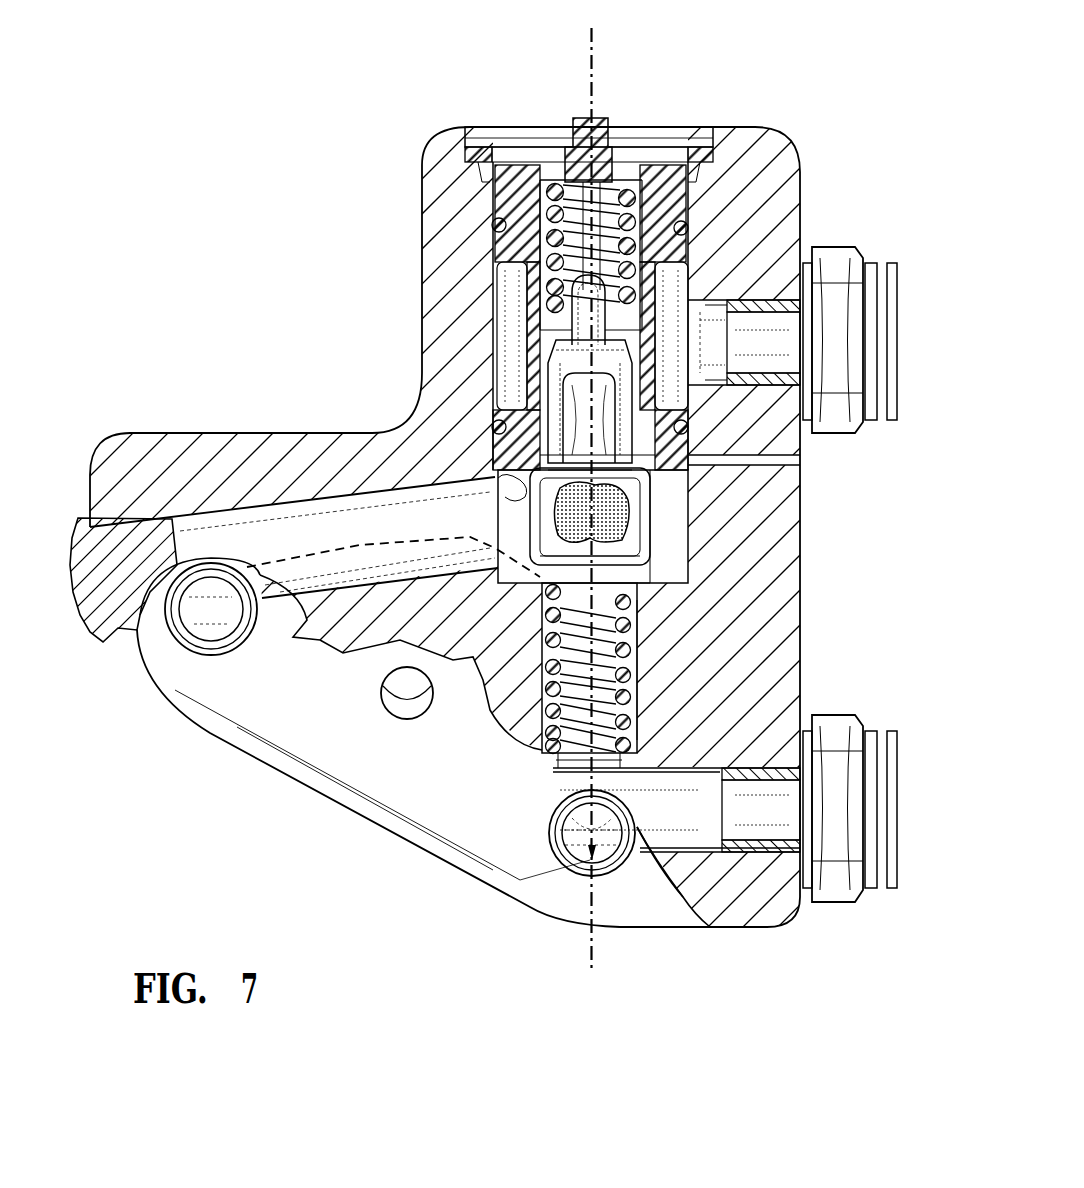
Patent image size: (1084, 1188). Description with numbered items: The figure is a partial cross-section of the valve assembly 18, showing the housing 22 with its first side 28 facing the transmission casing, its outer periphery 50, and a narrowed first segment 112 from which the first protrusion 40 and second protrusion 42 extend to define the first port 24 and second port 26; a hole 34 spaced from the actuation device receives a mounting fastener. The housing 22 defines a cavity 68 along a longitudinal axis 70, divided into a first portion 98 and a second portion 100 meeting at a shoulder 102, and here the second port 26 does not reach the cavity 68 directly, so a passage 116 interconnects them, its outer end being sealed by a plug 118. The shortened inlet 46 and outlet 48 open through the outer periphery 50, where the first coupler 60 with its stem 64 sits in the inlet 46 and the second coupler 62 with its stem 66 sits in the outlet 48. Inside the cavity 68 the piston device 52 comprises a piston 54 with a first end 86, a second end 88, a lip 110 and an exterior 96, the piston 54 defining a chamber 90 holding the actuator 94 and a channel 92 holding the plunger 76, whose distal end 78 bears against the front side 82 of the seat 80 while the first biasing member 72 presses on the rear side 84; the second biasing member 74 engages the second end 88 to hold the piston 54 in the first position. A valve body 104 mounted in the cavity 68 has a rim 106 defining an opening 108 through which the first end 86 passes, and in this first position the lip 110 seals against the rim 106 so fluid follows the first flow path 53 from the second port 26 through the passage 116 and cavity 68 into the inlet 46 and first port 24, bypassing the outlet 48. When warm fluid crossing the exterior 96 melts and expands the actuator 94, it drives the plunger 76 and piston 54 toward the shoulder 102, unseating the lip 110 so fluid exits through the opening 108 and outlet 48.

The valve assembly 18 is at (858, 112).
The housing 22 is at (313, 770).
The first port 24 is at (583, 867).
The second port 26 is at (203, 637).
The first side 28 is at (427, 827).
The hole 34 is at (410, 713).
The first protrusion 40 is at (627, 862).
The second protrusion 42 is at (250, 653).
The inlet 46 is at (707, 813).
The outlet 48 is at (705, 305).
The outer periphery 50 is at (745, 127).
The piston device 52 is at (700, 490).
The first flow path 53 is at (358, 550).
The piston 54 is at (697, 580).
The first coupler 60 is at (880, 843).
The second coupler 62 is at (880, 313).
The stem of first coupler 64 is at (757, 765).
The stem of second coupler 66 is at (762, 287).
The cavity 68 is at (510, 347).
The longitudinal axis 70 is at (600, 46).
The first biasing member 72 is at (556, 180).
The second biasing member 74 is at (545, 738).
The plunger 76 is at (590, 400).
The distal end 78 is at (693, 203).
The seat 80 is at (593, 287).
The front side 82 is at (660, 330).
The rear side 84 is at (688, 262).
The first end 86 is at (568, 332).
The second end 88 is at (632, 662).
The chamber 90 is at (622, 507).
The channel 92 is at (615, 440).
The actuator 94 is at (556, 510).
The exterior 96 is at (672, 567).
The first portion 98 is at (645, 580).
The second portion 100 is at (640, 640).
The shoulder 102 is at (480, 620).
The valve body 104 is at (493, 200).
The rim 106 is at (530, 472).
The opening 108 is at (547, 452).
The lip 110 is at (625, 452).
The first segment 112 is at (173, 683).
The passage 116 is at (236, 540).
The plug 118 is at (103, 585).